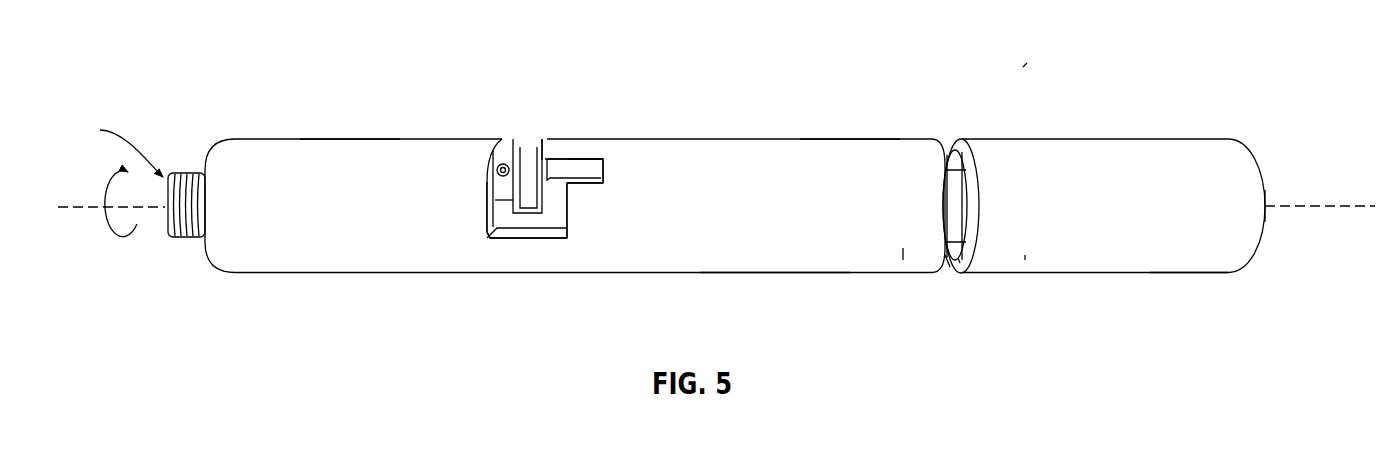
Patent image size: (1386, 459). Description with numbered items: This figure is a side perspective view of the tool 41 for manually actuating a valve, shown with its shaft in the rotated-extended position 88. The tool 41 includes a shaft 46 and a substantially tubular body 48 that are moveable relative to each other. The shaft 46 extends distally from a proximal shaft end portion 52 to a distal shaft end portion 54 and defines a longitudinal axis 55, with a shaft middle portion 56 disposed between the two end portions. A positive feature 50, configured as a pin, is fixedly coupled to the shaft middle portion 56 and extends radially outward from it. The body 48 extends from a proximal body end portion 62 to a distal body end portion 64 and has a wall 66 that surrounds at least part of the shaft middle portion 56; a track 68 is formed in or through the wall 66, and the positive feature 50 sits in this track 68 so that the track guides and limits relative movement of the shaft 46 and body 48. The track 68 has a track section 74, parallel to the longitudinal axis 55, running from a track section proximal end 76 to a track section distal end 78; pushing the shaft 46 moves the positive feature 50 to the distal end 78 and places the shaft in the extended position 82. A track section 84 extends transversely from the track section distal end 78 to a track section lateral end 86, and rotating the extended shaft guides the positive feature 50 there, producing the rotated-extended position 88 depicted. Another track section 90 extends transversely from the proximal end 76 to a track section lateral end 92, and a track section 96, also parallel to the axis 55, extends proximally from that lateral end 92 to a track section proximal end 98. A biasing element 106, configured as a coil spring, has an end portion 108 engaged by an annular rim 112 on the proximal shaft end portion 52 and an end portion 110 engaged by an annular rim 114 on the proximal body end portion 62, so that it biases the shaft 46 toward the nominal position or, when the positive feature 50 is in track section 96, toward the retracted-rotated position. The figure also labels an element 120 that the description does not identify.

The tool 41 is at (1025, 65).
The shaft 46 is at (190, 238).
The body 48 is at (717, 155).
The positive feature 50 is at (510, 163).
The proximal shaft end portion 52 is at (1263, 182).
The distal shaft end portion 54 is at (192, 172).
The longitudinal axis 55 is at (82, 207).
The shaft middle portion 56 is at (559, 178).
The proximal body end portion 62 is at (837, 153).
The distal body end portion 64 is at (277, 157).
The wall 66 is at (768, 250).
The track 68 is at (601, 157).
The track section 74 is at (509, 240).
The track section proximal end 76 is at (567, 241).
The track section distal end 78 is at (480, 235).
The extended position 82 is at (116, 147).
The track section 84 is at (480, 192).
The track section lateral end 86 is at (503, 136).
The rotated-extended position 88 is at (133, 222).
The track section 90 is at (569, 212).
The track section lateral end 92 is at (545, 145).
The track section 96 is at (581, 152).
The track section proximal end 98 is at (599, 179).
The biasing element 106 is at (980, 157).
The end portion 108 is at (1025, 260).
The end portion 110 is at (903, 248).
The annular rim 112 is at (960, 263).
The annular rim 114 is at (950, 267).
The tube bottom wall 120 is at (1200, 262).